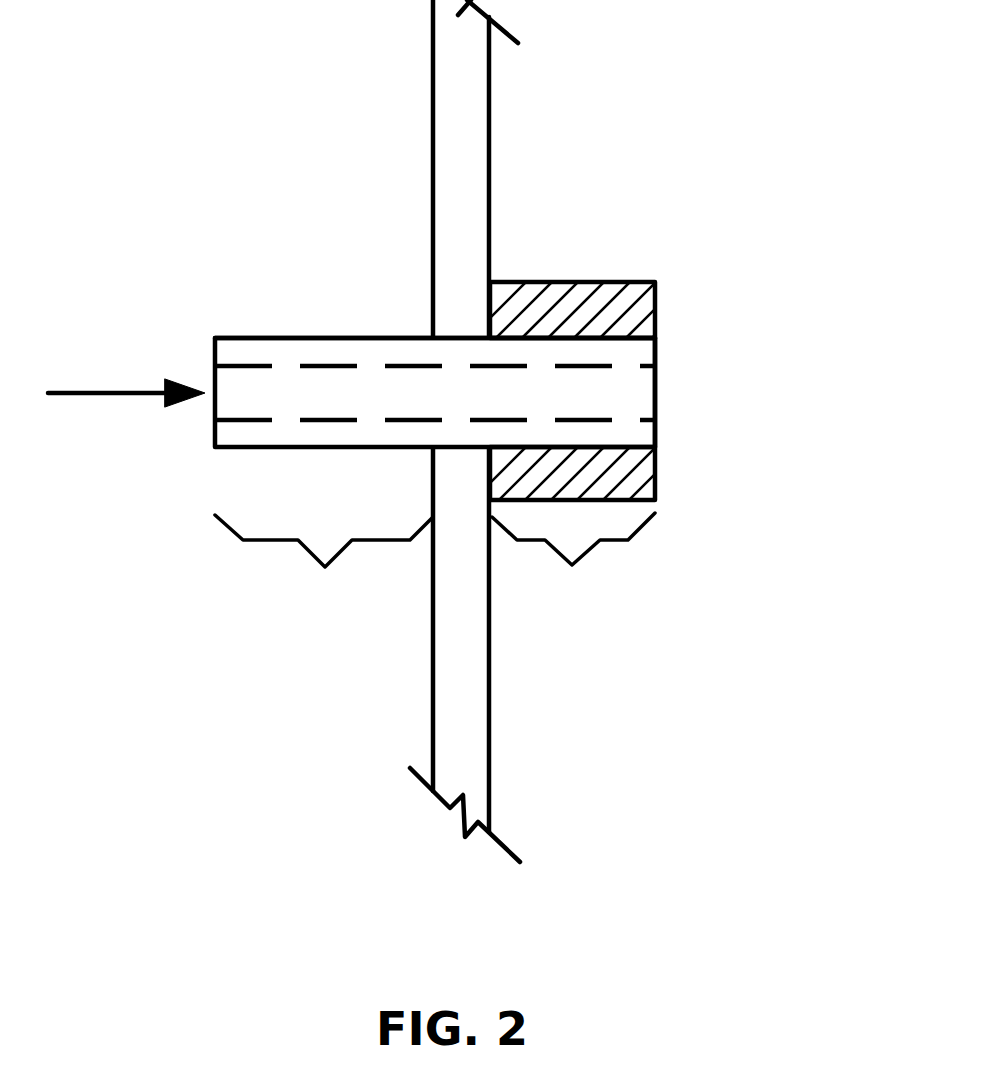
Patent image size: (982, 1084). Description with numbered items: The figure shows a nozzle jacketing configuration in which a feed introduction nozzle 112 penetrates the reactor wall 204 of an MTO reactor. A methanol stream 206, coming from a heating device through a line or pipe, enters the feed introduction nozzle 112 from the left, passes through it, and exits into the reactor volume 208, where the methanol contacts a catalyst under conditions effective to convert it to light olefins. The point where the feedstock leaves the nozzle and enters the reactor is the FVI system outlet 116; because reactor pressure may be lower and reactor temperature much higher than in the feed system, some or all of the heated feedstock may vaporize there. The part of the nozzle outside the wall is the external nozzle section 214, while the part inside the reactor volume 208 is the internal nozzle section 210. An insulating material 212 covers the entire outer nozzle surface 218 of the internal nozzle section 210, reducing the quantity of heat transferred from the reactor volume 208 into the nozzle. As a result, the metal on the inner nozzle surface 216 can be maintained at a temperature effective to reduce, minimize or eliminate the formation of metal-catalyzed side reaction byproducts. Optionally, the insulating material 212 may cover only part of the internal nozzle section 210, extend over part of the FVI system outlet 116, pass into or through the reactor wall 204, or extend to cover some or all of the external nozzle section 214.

The feed introduction nozzle 112 is at (297, 353).
The FVI system outlet 116 is at (655, 390).
The reactor wall 204 is at (463, 673).
The methanol stream 206 is at (116, 392).
The reactor volume 208 is at (778, 292).
The internal nozzle section 210 is at (573, 569).
The insulating material 212 is at (653, 467).
The external nozzle section 214 is at (324, 570).
The inner nozzle surface 216 is at (579, 362).
The outer nozzle surface 218 is at (373, 338).